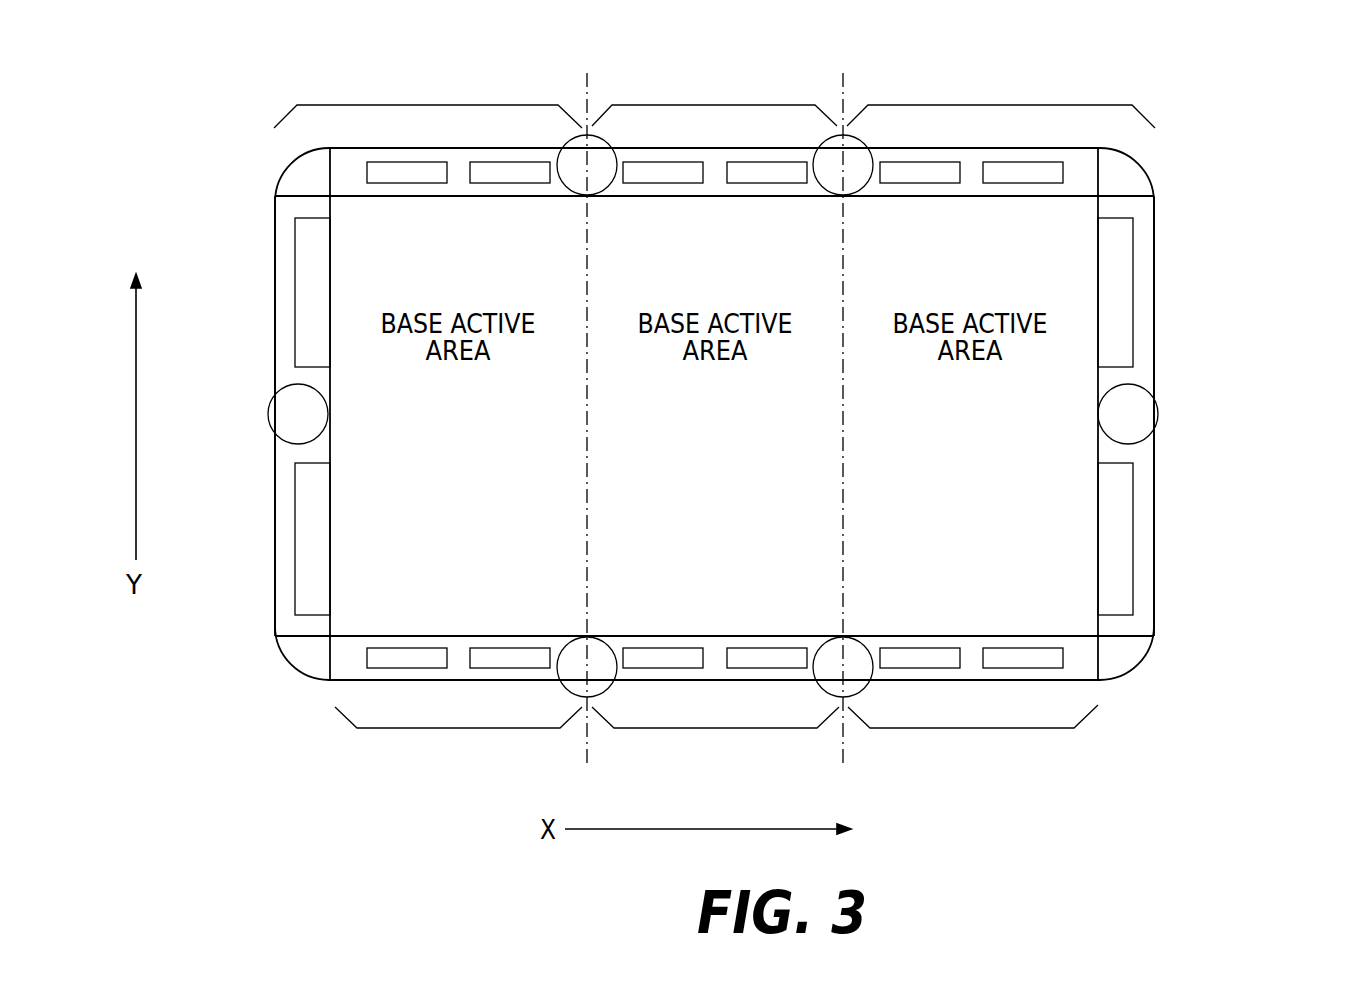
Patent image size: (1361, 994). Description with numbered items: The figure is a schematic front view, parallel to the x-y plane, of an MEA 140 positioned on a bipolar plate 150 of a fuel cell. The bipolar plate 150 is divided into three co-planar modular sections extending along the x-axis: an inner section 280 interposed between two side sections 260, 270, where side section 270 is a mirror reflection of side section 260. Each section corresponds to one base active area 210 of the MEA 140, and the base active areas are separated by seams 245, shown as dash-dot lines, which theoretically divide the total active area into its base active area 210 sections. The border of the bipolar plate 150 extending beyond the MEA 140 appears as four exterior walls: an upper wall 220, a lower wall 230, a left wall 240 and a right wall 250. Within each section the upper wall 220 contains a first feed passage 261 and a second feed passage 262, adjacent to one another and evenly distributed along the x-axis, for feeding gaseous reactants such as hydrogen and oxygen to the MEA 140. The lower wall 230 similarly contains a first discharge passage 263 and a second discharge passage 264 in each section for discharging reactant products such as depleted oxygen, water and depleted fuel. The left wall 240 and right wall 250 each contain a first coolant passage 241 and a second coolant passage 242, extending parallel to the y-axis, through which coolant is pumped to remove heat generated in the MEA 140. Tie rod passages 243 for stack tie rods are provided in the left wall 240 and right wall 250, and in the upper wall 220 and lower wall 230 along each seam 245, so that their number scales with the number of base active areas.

The bipolar plate 150 is at (1242, 107).
The MEA 140 is at (1065, 268).
The base active area 210 is at (458, 728).
The upper wall 220 is at (1073, 147).
The lower wall 230 is at (1137, 693).
The left wall 240 is at (263, 585).
The right wall 250 is at (1224, 602).
The side section 260 is at (425, 105).
The side section 270 is at (1025, 105).
The inner section 280 is at (733, 105).
The first coolant passage 241 is at (308, 540).
The second coolant passage 242 is at (305, 310).
The tie rod passage 243 is at (595, 167).
The seam 245 is at (587, 456).
The first feed passage 261 is at (404, 178).
The second feed passage 262 is at (496, 178).
The first discharge passage 263 is at (394, 660).
The second discharge passage 264 is at (490, 660).